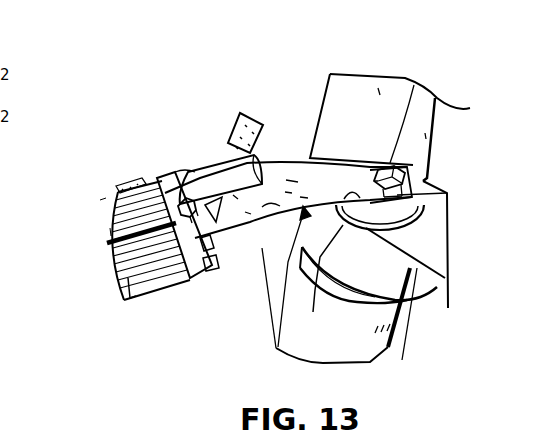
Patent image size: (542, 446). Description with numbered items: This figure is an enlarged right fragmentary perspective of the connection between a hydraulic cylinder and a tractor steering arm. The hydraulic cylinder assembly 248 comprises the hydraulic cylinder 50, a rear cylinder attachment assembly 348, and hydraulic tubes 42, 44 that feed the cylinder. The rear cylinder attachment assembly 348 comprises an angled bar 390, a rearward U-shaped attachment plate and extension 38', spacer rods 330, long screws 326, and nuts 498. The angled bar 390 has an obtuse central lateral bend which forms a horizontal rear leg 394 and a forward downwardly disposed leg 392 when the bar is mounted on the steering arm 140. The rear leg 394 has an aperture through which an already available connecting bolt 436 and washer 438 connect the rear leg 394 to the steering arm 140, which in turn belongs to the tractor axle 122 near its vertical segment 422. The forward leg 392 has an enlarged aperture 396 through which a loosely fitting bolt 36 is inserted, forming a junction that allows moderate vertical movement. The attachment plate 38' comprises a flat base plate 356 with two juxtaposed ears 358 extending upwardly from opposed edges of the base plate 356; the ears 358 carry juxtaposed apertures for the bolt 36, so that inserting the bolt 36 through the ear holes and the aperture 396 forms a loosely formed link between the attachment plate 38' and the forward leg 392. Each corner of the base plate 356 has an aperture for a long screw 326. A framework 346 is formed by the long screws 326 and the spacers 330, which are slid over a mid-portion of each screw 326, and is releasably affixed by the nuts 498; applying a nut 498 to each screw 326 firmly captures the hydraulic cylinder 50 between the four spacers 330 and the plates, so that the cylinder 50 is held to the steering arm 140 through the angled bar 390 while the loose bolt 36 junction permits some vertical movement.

The tractor axle 122 is at (336, 92).
The connecting bolt 436 is at (414, 85).
The ears 358 is at (273, 134).
The enlarged aperture 396 is at (274, 167).
The washer 438 is at (288, 347).
The angled bar 390 is at (280, 346).
The vertical segment 422 is at (327, 350).
The steering arm 140 is at (398, 329).
The horizontal rear leg 394 is at (414, 258).
The hydraulic tube 42 is at (243, 116).
The bolt 36 is at (218, 165).
The rearward U-shaped attachment plate and extension 38' is at (174, 193).
The long screws 326 is at (187, 107).
The hydraulic cylinder 50 is at (118, 280).
The spacer rods 330 is at (145, 183).
The framework 346 is at (120, 225).
The rear cylinder attachment assembly 348 is at (133, 100).
The hydraulic tube 44 is at (135, 165).
The nuts 498 is at (200, 168).
The hydraulic cylinder assembly 248 is at (145, 302).
The flat base plate 356 is at (169, 275).
The forward downwardly disposed leg 392 is at (258, 220).